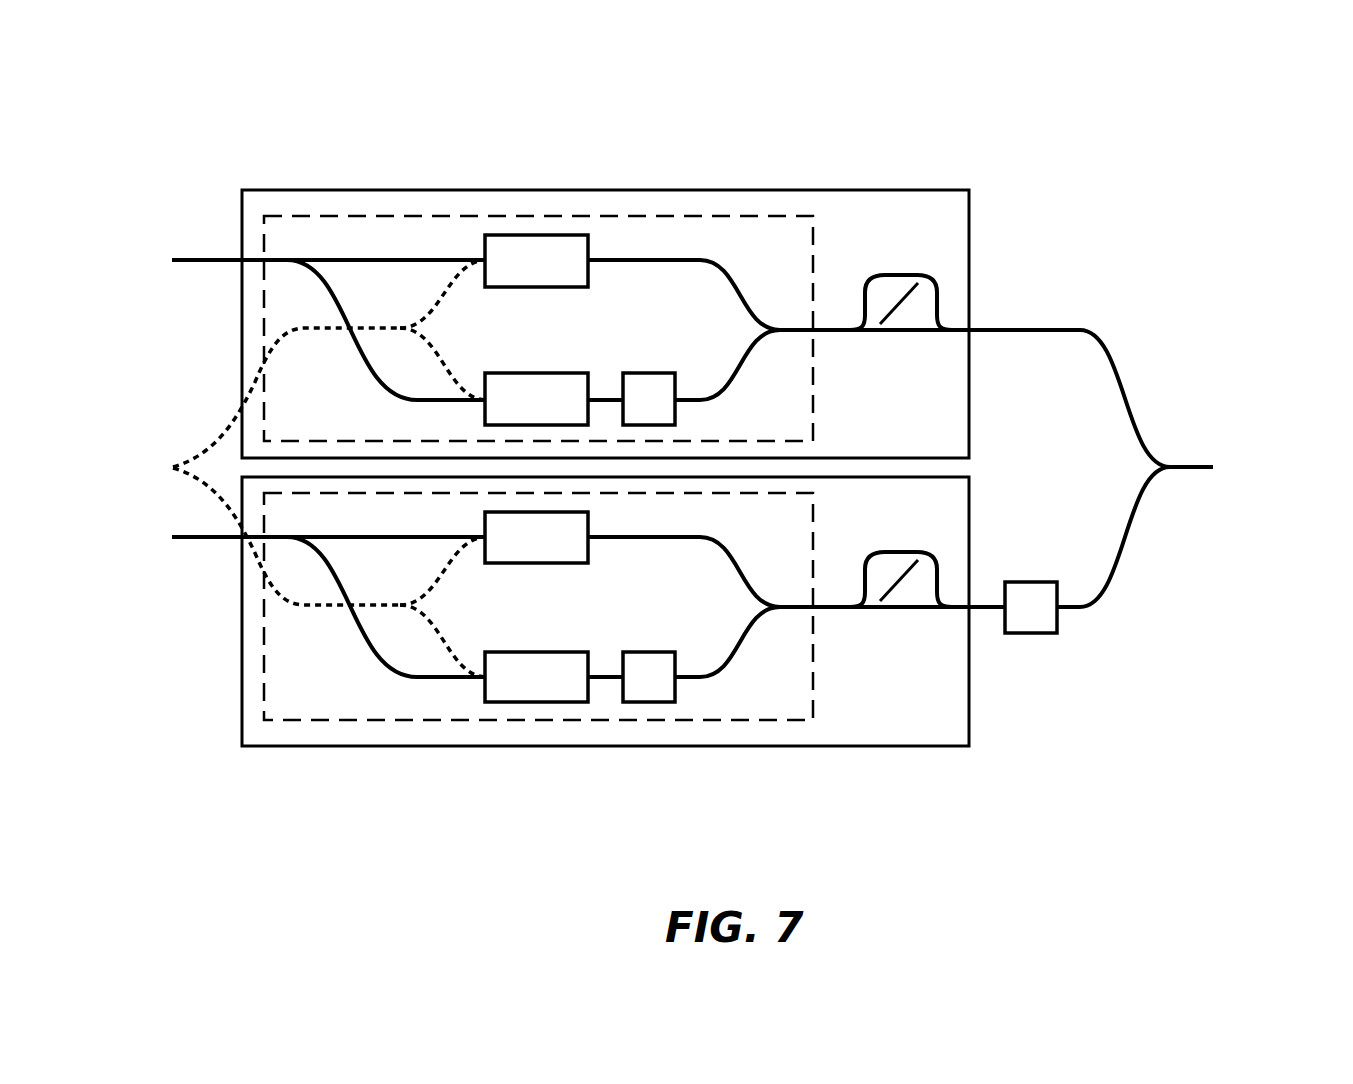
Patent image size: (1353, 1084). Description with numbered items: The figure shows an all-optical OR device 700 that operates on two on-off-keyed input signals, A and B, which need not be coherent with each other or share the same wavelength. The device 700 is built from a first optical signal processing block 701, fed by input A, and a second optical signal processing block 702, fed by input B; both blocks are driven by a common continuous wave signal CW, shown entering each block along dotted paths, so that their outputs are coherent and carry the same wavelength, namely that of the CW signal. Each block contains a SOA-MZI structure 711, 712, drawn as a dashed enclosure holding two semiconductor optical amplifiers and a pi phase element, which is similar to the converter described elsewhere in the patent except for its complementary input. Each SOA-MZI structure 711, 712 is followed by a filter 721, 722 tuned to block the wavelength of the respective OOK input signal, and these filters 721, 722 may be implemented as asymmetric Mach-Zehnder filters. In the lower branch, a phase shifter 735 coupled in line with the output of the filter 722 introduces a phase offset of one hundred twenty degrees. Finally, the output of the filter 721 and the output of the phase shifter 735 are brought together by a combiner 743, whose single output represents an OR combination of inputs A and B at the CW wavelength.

The all-optical OR device 700 is at (708, 85).
The first optical signal processing block 701 is at (510, 190).
The second optical signal processing block 702 is at (512, 746).
The SOA-MZI structure 711 is at (768, 216).
The SOA-MZI structure 712 is at (767, 720).
The filter 721 is at (901, 274).
The filter 722 is at (901, 549).
The phase shifter 735 is at (1034, 636).
The combiner 743 is at (1171, 460).